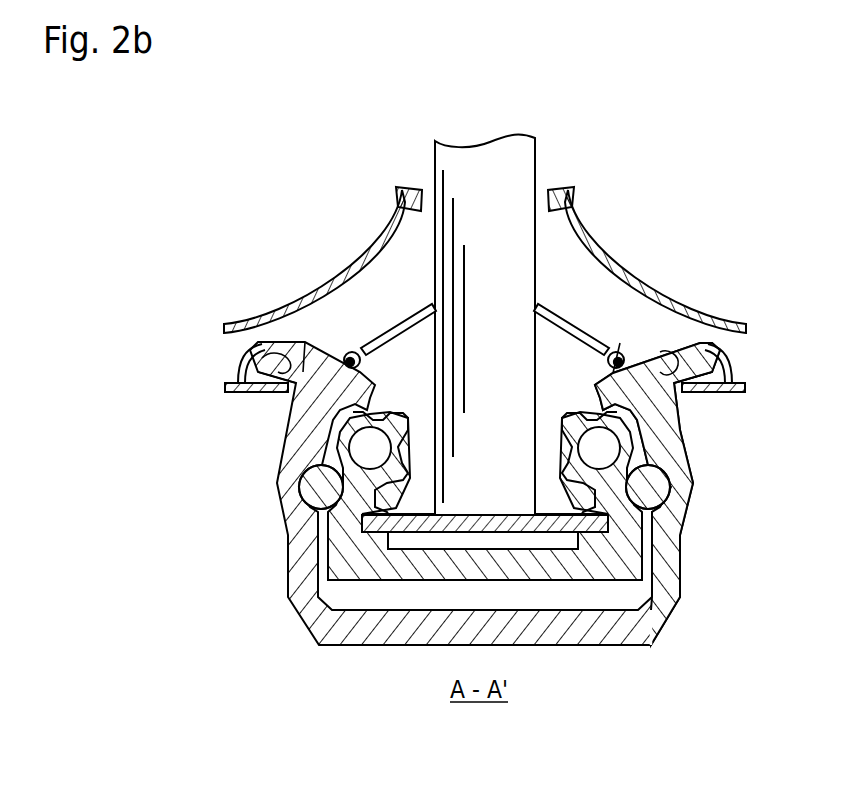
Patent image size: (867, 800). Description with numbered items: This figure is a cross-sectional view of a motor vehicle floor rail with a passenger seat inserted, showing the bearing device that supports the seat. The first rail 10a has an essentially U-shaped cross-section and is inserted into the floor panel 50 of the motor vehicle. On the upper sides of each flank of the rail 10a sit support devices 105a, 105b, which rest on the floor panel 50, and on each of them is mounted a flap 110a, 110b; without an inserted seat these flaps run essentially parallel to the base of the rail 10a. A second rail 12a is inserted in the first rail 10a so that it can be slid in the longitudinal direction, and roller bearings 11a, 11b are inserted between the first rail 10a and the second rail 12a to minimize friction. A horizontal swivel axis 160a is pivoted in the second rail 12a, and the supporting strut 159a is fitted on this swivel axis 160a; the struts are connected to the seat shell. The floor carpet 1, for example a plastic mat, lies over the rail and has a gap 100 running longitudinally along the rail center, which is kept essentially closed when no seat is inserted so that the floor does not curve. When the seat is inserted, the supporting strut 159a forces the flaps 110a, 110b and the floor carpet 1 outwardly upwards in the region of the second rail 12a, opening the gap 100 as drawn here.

The gap 100 is at (482, 118).
The first supporting strut 159a is at (523, 163).
The floor carpet 1 is at (373, 238).
The flap 110a is at (392, 328).
The flap 110b is at (578, 330).
The support device 105a is at (273, 350).
The support device 105b is at (700, 347).
The floor panel 50 is at (257, 392).
The roller bearing 11a is at (315, 492).
The roller bearing 11b is at (667, 492).
The horizontal swivel axis 160a is at (380, 523).
The second rail 12a is at (627, 555).
The rail 10a is at (336, 633).